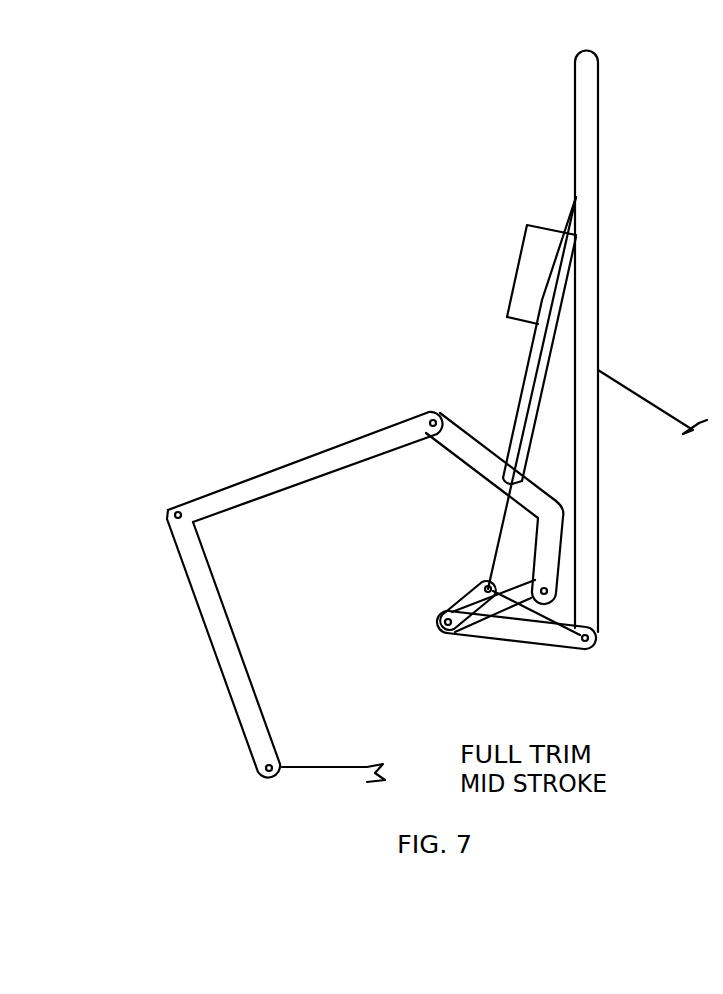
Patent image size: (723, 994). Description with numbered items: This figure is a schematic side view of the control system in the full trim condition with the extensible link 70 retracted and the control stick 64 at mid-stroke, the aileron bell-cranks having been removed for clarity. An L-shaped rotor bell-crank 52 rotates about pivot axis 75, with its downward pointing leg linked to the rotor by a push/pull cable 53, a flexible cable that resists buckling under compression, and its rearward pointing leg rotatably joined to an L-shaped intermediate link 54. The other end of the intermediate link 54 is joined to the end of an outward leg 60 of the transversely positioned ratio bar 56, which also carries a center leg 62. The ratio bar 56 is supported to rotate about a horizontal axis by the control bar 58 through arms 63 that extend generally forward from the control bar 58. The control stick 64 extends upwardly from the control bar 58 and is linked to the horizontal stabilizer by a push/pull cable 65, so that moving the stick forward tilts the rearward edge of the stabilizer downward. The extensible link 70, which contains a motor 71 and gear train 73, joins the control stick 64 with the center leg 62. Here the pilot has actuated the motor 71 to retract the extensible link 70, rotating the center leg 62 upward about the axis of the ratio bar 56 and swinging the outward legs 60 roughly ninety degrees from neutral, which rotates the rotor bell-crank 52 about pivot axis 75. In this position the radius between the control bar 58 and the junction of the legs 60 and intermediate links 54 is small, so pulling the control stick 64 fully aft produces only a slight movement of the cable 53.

The rotor bell-crank 52 is at (280, 650).
The push/pull cable 53 is at (353, 765).
The intermediate link 54 is at (470, 466).
The ratio bar 56 is at (450, 633).
The control bar 58 is at (597, 636).
The outward leg 60 is at (497, 636).
The center leg 62 is at (465, 600).
The arm 63 is at (542, 645).
The control stick 64 is at (600, 233).
The push/pull cable 65 is at (657, 402).
The extensible link 70 is at (492, 326).
The motor 71 is at (518, 273).
The gear train 73 is at (530, 353).
The pivot axis 75 is at (182, 513).